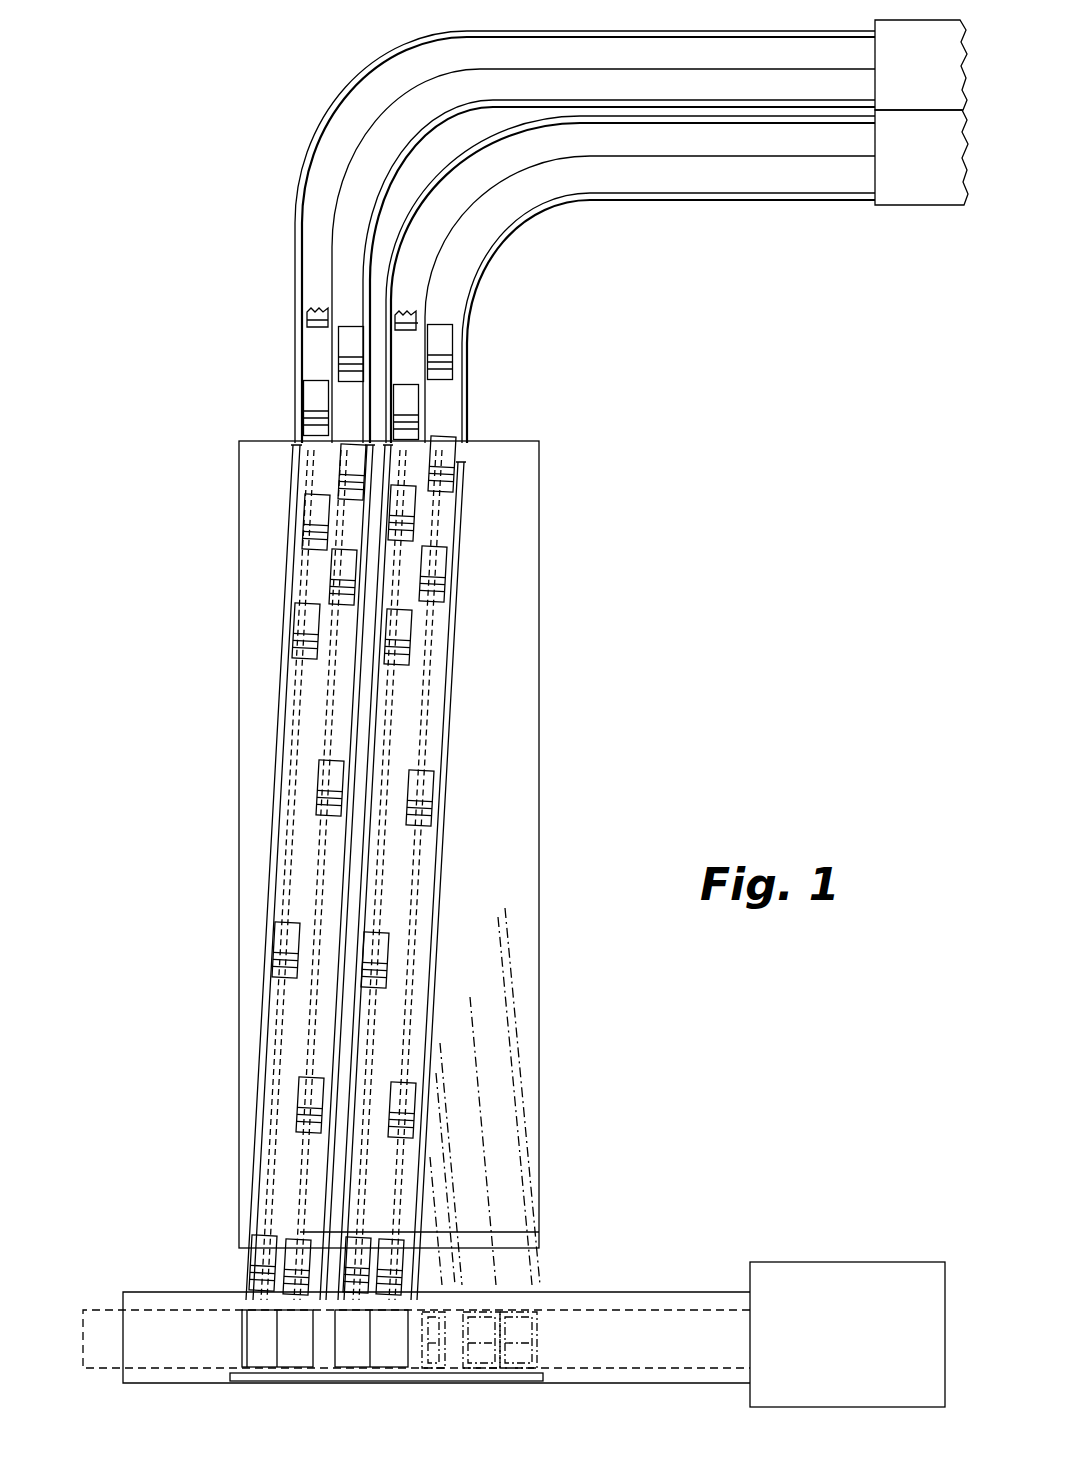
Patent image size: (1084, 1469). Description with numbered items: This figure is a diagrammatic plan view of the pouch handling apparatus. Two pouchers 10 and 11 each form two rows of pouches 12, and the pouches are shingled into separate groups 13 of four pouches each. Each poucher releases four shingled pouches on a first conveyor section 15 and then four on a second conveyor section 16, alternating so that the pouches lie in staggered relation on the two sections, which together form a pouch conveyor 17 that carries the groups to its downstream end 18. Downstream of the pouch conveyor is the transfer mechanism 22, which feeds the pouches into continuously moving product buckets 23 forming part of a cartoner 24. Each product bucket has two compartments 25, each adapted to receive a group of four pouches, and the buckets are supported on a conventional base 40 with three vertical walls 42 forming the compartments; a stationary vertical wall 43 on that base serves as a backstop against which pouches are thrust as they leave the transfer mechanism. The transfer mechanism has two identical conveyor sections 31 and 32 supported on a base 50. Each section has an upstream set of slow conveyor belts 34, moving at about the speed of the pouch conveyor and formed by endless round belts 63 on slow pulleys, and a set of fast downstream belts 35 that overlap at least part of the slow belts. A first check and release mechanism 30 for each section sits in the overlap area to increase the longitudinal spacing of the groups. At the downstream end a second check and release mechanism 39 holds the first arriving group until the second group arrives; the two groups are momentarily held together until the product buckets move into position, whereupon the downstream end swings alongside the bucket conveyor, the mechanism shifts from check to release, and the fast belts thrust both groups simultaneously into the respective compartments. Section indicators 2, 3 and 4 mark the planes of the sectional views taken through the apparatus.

The section line 2- 2 is at (322, 449).
The section line 3- 3 is at (323, 423).
The section line 4- 4 is at (218, 412).
The poucher 10 is at (921, 65).
The poucher 11 is at (921, 157).
The pouches 12 is at (447, 330).
The groups of pouches 13 is at (455, 358).
The first conveyor section 15 is at (585, 237).
The second conveyor section 16 is at (603, 256).
The pouch conveyor 17 is at (344, 98).
The downstream end 18 is at (293, 432).
The transfer mechanism 22 is at (575, 686).
The product buckets 23 is at (292, 1370).
The cartoner 24 is at (847, 1334).
The compartments 25 is at (395, 1370).
The first check and release mechanism 30 is at (450, 612).
The conveyor section 31 is at (320, 690).
The conveyor section 32 is at (290, 740).
The upstream conveyor belts 34 is at (305, 568).
The downstream belts 35 is at (290, 880).
The second check and release mechanism 39 is at (440, 1302).
The base 40 is at (145, 1292).
The vertical walls 42 is at (305, 1360).
The stationary vertical wall 43 is at (565, 1366).
The base 50 is at (526, 838).
The endless round belts 63 is at (298, 582).